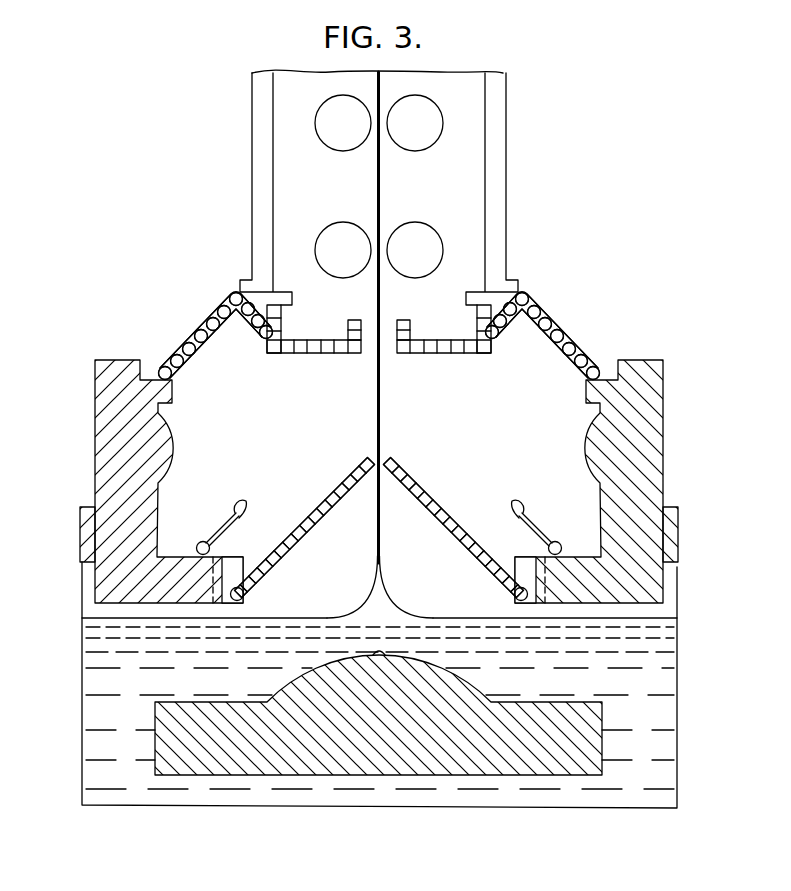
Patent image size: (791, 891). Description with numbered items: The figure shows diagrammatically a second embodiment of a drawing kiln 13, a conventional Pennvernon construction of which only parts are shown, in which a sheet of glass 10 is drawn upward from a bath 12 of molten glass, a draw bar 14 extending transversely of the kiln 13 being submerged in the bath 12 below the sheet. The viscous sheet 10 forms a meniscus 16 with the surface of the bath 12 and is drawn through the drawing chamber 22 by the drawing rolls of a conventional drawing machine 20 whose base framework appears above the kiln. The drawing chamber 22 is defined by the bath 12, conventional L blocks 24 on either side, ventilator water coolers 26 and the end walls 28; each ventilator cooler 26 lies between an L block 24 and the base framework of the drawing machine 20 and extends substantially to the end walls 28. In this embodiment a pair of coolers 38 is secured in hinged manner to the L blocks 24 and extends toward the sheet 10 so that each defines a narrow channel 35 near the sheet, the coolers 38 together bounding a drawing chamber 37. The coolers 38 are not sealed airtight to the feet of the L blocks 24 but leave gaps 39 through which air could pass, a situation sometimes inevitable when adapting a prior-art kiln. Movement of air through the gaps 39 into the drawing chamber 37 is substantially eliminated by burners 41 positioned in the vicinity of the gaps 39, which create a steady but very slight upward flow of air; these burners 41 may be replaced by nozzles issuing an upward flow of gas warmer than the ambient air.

The sheet of glass 10 is at (382, 422).
The bath of molten glass 12 is at (497, 620).
The drawing kiln 13 is at (180, 345).
The block 14 is at (418, 768).
The meniscus 16 is at (390, 602).
The drawing machine 20 is at (477, 210).
The drawing chamber 22 is at (545, 378).
The L block 24 is at (177, 452).
The ventilator water cooler 26 is at (224, 312).
The end wall 28 is at (507, 409).
The narrow channel 35 is at (372, 461).
The drawing chamber 37 is at (432, 537).
The cooler 38 is at (292, 551).
The gap 39 is at (247, 558).
The burner 41 is at (225, 516).